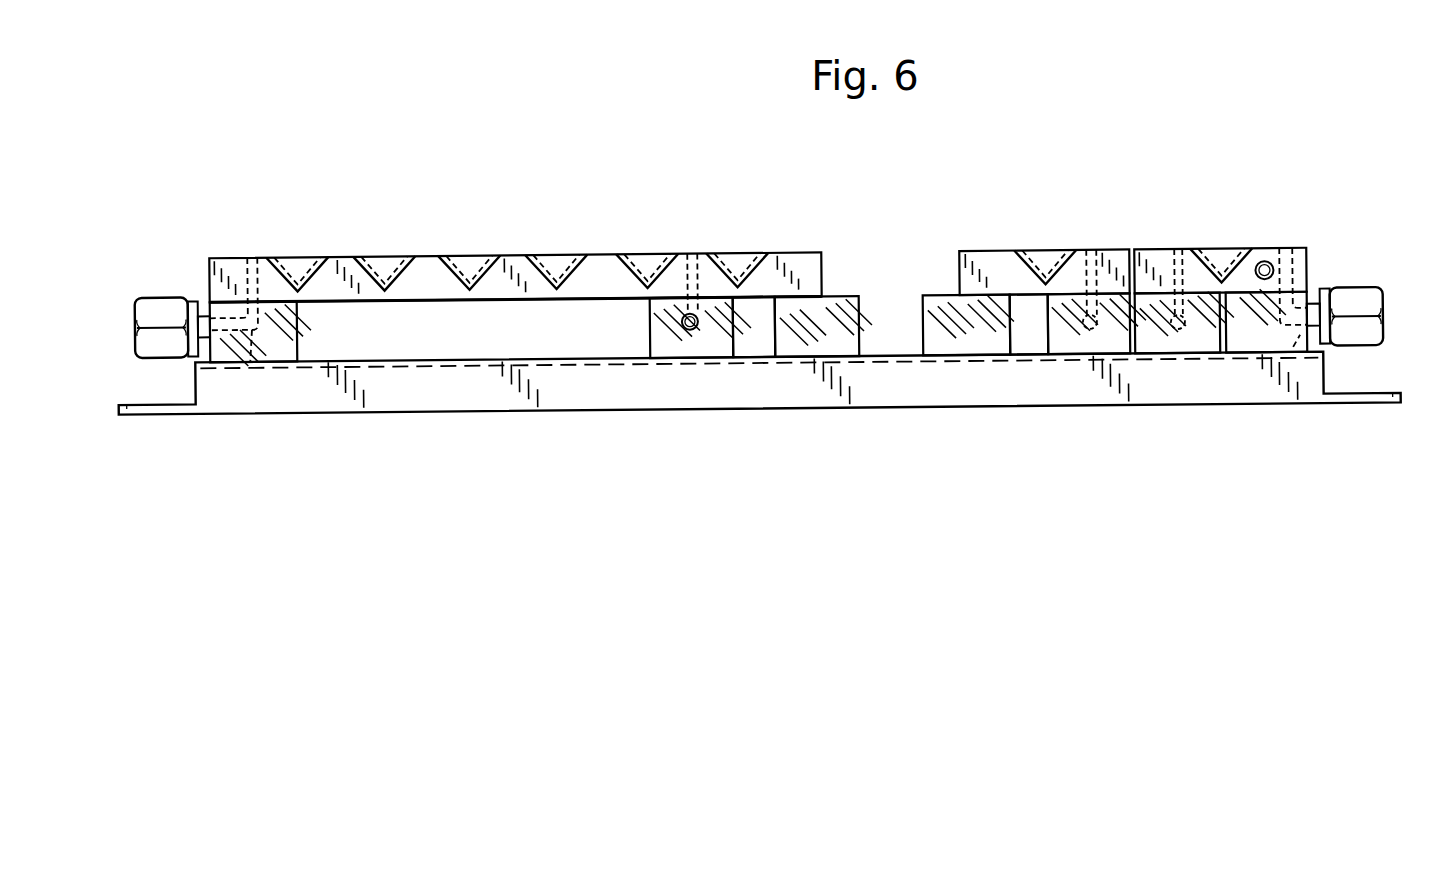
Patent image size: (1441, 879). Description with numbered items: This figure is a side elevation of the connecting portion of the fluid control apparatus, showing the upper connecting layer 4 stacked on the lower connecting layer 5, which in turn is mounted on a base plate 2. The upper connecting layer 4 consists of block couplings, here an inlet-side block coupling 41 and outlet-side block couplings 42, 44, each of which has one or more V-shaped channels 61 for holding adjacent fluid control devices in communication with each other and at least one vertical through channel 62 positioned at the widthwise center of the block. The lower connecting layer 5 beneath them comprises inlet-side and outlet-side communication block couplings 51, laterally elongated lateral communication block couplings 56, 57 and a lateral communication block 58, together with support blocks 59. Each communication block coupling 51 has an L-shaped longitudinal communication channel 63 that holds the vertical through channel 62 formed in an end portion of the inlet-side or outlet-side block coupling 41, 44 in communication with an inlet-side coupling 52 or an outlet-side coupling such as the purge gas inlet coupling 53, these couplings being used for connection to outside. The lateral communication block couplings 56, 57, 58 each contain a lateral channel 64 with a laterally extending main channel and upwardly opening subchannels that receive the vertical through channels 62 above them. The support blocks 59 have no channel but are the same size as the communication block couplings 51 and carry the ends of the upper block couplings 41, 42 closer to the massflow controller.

The base plate 2 is at (472, 387).
The upper connecting layer 4 is at (1312, 262).
The lower connecting layer 5 is at (1357, 358).
The inlet-side block coupling 41 is at (430, 265).
The outlet-side block coupling 42 is at (997, 260).
The outlet-side block coupling 44 is at (1263, 263).
The communication block coupling 51 is at (282, 346).
The inlet-side coupling 52 is at (152, 299).
The purge gas inlet coupling 53 is at (1363, 300).
The lateral communication block coupling 56 is at (670, 346).
The lateral communication block coupling 57 is at (1093, 346).
The lateral communication block 58 is at (1205, 346).
The support block 59 is at (817, 343).
The V-shaped channel 61 is at (315, 252).
The vertical through channel 62 is at (243, 268).
The L-shaped longitudinal communication channel 63 is at (252, 325).
The lateral channel 64 is at (695, 328).